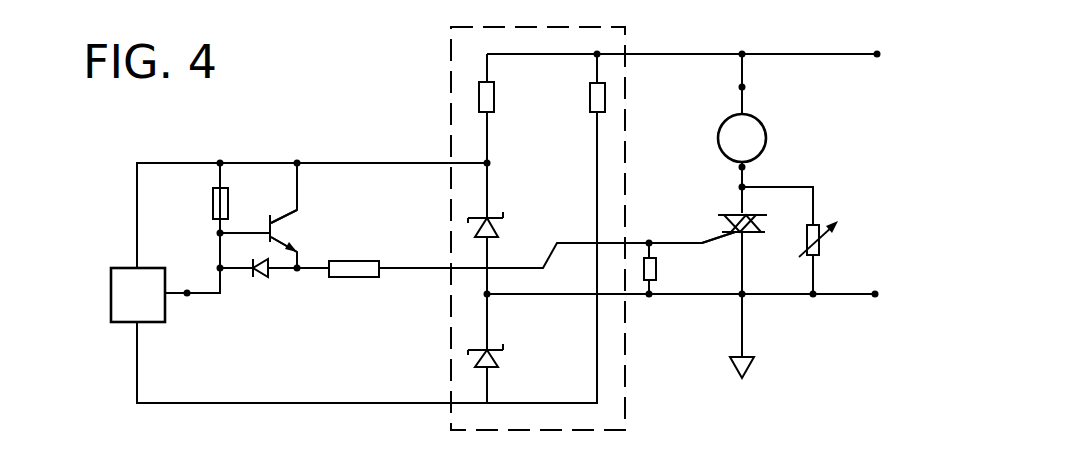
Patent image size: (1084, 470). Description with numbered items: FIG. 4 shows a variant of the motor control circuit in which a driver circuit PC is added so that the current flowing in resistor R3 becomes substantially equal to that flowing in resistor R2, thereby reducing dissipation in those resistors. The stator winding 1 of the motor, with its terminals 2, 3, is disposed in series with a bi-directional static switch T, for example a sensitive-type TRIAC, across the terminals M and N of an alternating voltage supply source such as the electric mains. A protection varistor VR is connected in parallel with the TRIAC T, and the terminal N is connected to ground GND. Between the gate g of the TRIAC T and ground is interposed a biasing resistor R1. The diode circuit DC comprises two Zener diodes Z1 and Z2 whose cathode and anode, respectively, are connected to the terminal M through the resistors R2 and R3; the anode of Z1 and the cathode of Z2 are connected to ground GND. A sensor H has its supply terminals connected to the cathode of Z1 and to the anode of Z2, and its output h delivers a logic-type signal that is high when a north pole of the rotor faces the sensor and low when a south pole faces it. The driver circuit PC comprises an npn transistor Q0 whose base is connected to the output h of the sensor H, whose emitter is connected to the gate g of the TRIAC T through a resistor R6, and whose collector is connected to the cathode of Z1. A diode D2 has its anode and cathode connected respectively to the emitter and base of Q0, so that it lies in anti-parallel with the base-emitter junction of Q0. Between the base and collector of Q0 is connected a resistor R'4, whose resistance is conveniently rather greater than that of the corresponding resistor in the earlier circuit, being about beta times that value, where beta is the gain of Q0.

The sensor H is at (127, 283).
The output of the sensor h is at (187, 291).
The resistor R'4 is at (193, 202).
The transistor Q0 is at (295, 226).
The diode D2 is at (268, 279).
The resistor R6 is at (367, 261).
The driver circuit PC is at (305, 291).
The diode circuit DC is at (540, 27).
The resistor R2 is at (494, 97).
The resistor R3 is at (590, 99).
The Zener diode Z1 is at (503, 226).
The Zener diode Z2 is at (500, 362).
The stator winding 1 is at (752, 145).
The terminal of the stator winding 2 is at (742, 87).
The terminal of the stator winding 3 is at (742, 167).
The terminal of the alternating voltage supply source M is at (877, 57).
The terminal of the alternating voltage supply source N is at (876, 297).
The gate of the TRIAC g is at (679, 242).
The biasing resistor R1 is at (656, 269).
The bi-directional static switch T is at (765, 232).
The protection varistor VR is at (819, 248).
The ground GND is at (747, 360).